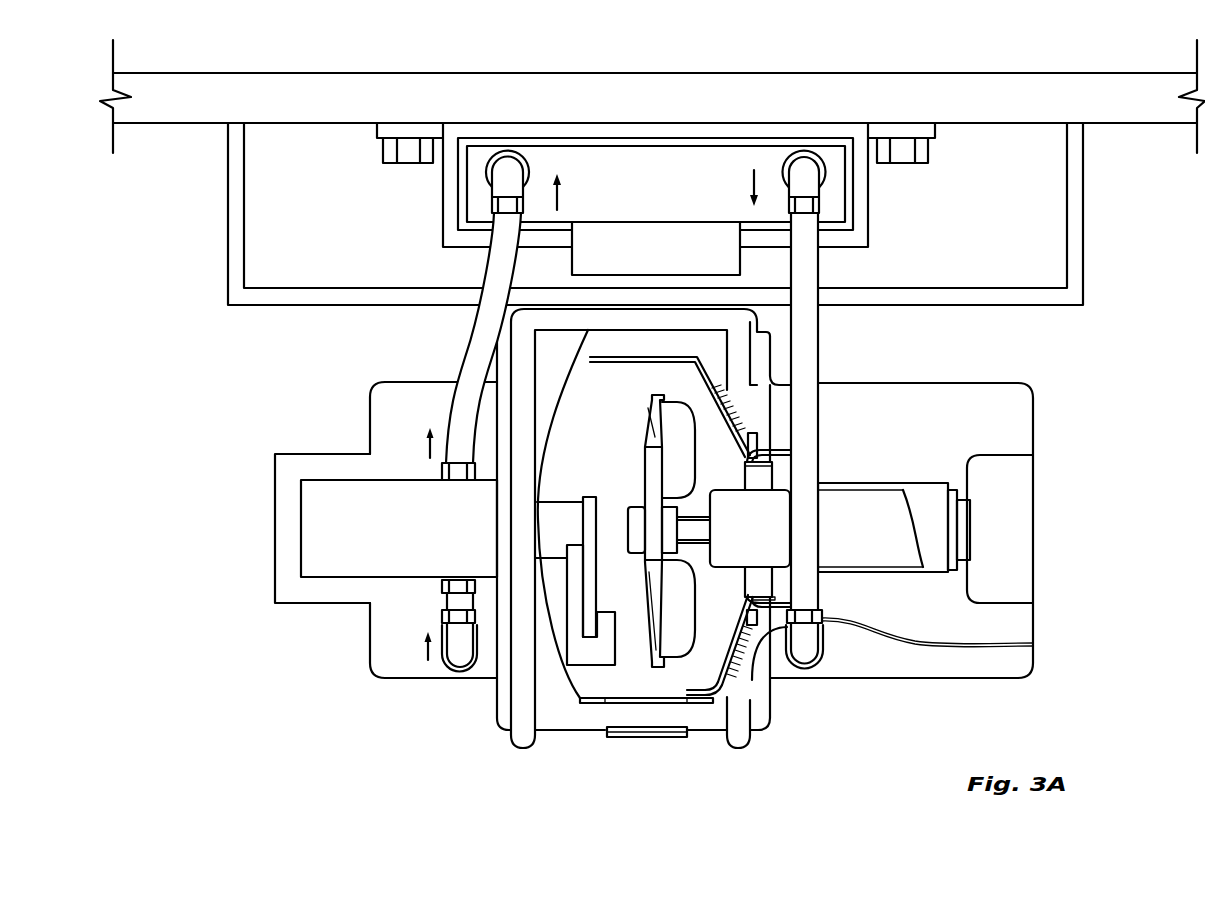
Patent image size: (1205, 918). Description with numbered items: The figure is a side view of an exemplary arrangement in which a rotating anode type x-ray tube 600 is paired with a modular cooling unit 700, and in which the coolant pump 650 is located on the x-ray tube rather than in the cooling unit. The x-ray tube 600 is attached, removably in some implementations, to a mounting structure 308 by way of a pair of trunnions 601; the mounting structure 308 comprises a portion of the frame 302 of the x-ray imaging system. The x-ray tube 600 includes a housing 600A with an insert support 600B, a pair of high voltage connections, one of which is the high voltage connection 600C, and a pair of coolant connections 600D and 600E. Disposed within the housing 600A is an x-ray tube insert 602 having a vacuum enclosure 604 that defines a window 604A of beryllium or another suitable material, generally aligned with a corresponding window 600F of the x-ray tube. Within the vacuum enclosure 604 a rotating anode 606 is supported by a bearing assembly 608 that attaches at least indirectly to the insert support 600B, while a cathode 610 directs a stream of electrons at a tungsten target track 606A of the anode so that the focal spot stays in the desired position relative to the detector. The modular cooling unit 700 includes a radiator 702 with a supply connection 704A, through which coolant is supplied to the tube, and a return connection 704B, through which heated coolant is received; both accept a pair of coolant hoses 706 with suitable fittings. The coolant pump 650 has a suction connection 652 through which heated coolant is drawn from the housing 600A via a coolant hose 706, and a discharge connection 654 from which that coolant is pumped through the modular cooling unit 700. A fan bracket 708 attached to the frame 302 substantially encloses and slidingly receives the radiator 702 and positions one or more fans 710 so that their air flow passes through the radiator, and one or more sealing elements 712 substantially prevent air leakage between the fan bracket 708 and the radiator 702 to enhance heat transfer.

The frame 302 is at (197, 87).
The mounting structure 308 is at (228, 256).
The modular cooling unit 700 is at (681, 158).
The radiator 702 is at (620, 198).
The supply connection 704A is at (822, 174).
The return connection 704B is at (485, 173).
The coolant hoses 706 is at (458, 422).
The fan bracket 708 is at (458, 249).
The fans 710 is at (730, 262).
The sealing elements 712 is at (845, 147).
The x-ray tube 600 is at (640, 522).
The housing 600A is at (975, 383).
The insert support 600B is at (1020, 571).
The high voltage connection 600C is at (297, 604).
The coolant connection 600D is at (460, 673).
The coolant connection 600E is at (805, 670).
The window 600F is at (660, 738).
The trunnions 601 is at (527, 748).
The x-ray tube insert 602 is at (812, 523).
The vacuum enclosure 604 is at (727, 702).
The window 604A is at (633, 707).
The rotating anode 606 is at (620, 471).
The target track 606A is at (648, 417).
The bearing assembly 608 is at (872, 538).
The cathode 610 is at (565, 655).
The coolant pump 650 is at (343, 578).
The suction connection 652 is at (442, 590).
The discharge connection 654 is at (442, 470).